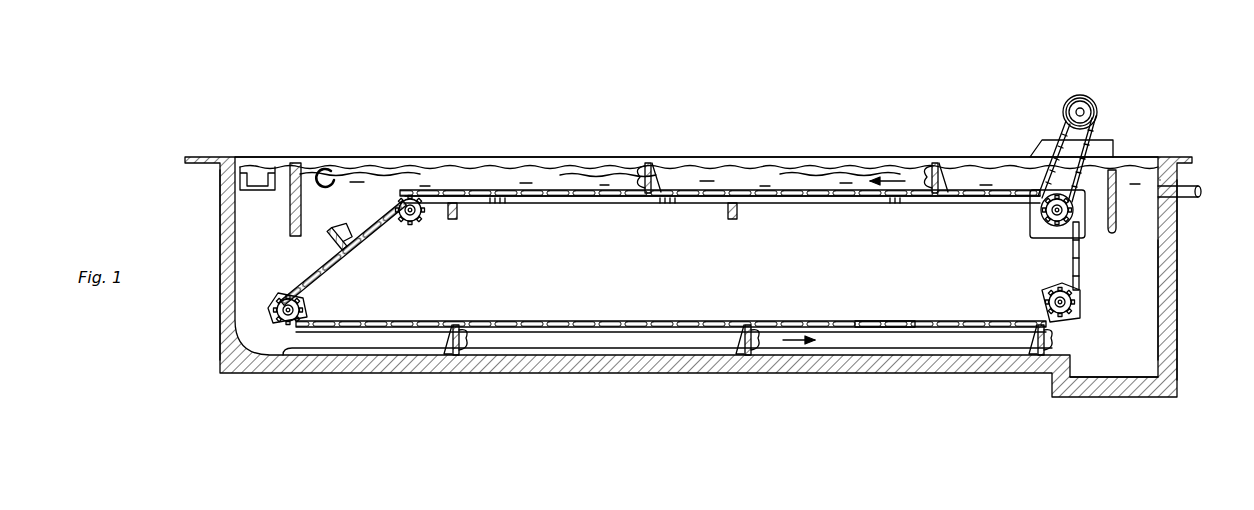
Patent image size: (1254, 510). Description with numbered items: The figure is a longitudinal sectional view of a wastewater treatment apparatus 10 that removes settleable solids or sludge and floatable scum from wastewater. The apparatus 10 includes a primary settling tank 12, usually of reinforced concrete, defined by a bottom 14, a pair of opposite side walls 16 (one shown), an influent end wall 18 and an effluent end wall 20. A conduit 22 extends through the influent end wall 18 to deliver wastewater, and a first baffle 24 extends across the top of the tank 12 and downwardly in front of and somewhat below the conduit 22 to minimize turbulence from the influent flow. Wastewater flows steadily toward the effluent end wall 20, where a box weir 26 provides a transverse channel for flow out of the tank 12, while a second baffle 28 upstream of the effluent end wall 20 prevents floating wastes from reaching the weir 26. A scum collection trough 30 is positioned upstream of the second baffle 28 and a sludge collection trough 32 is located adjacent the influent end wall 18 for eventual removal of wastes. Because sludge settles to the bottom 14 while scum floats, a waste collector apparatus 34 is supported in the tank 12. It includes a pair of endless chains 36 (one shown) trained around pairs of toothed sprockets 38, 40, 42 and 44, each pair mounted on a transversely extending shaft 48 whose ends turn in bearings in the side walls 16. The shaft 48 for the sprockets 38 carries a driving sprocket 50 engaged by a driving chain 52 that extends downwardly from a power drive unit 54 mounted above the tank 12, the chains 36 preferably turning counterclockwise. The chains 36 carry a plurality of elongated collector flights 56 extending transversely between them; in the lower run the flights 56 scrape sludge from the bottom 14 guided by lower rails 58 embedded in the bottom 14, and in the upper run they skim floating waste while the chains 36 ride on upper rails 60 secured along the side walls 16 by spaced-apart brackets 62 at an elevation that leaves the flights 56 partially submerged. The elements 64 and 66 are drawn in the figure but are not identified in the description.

The wastewater treatment apparatus 10 is at (1160, 100).
The settling tank 12 is at (494, 380).
The bottom 14 is at (636, 343).
The side walls 16 is at (518, 160).
The influent end wall 18 is at (1177, 328).
The effluent end wall 20 is at (220, 242).
The conduit 22 is at (1201, 191).
The first baffle 24 is at (1112, 232).
The box weir 26 is at (250, 193).
The second baffle 28 is at (296, 160).
The scum collection trough 30 is at (331, 168).
The sludge collection trough 32 is at (1135, 378).
The waste collector apparatus 34 is at (1122, 292).
The endless chain 36 is at (672, 263).
The sprocket 38 is at (1032, 214).
The sprocket 40 is at (417, 224).
The sprocket 42 is at (300, 309).
The sprocket 44 is at (1050, 290).
The shaft 48 is at (405, 224).
The driving sprocket 50 is at (1054, 150).
The driving chain 52 is at (1066, 108).
The power drive unit 54 is at (1092, 100).
The collector flight 56 is at (644, 165).
The lower rail 58 is at (975, 345).
The upper rail 60 is at (612, 204).
The bracket 62 is at (458, 220).
The chain link 64 is at (898, 321).
The flight 66 is at (936, 196).